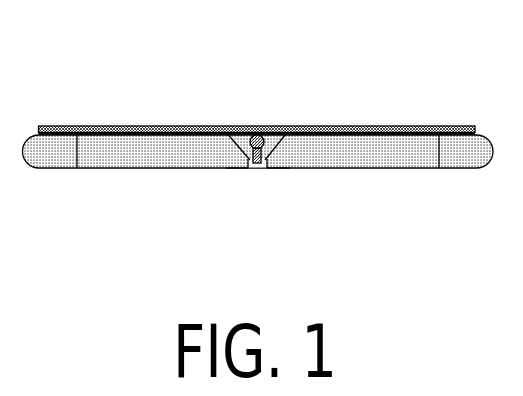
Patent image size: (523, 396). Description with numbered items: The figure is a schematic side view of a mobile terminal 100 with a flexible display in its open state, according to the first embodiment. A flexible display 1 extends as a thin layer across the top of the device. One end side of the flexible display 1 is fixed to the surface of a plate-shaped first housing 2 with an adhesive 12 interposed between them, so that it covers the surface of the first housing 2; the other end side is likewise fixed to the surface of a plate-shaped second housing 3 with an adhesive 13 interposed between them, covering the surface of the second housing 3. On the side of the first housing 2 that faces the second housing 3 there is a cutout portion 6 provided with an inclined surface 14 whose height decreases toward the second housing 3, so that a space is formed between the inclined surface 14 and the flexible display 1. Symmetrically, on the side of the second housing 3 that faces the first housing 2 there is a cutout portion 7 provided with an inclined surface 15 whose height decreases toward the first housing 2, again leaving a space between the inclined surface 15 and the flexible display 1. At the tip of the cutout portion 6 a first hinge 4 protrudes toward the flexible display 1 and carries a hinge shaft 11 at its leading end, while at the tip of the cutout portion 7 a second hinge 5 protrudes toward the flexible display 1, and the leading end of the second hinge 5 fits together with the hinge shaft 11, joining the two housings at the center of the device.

The mobile terminal 100 is at (258, 118).
The flexible display 1 is at (138, 126).
The first housing 2 is at (137, 169).
The second housing 3 is at (378, 169).
The first hinge 4 is at (248, 163).
The second hinge 5 is at (267, 163).
The cutout portion 6 is at (232, 160).
The cutout portion 7 is at (283, 160).
The hinge shaft 11 is at (256, 134).
The adhesive 12 is at (77, 168).
The adhesive 13 is at (439, 168).
The inclined surface 14 is at (236, 136).
The inclined surface 15 is at (282, 136).